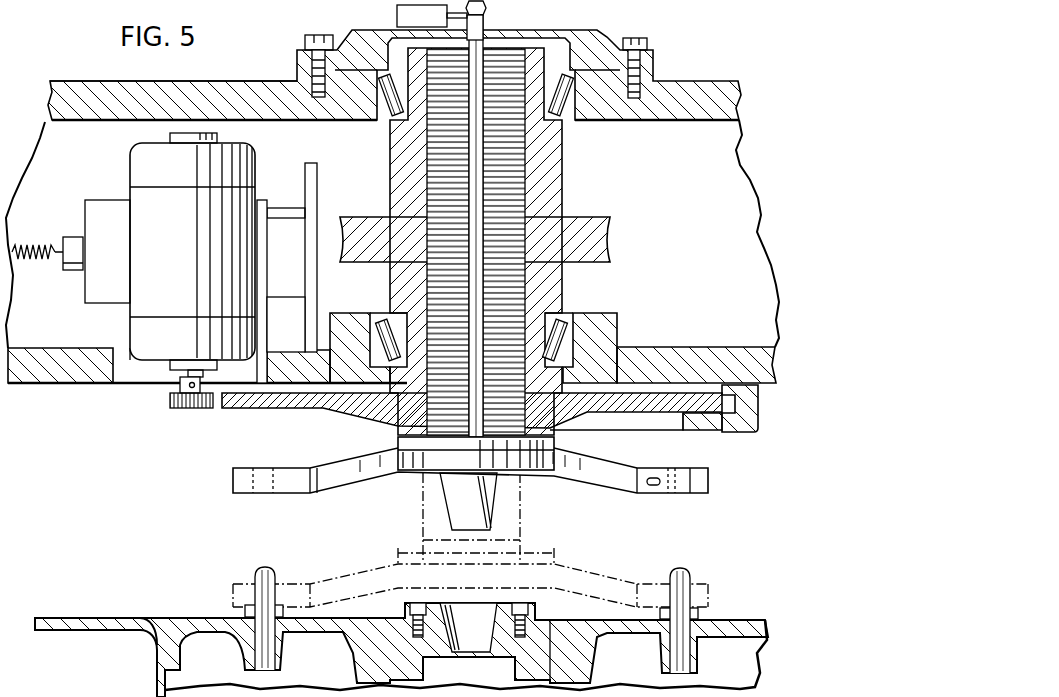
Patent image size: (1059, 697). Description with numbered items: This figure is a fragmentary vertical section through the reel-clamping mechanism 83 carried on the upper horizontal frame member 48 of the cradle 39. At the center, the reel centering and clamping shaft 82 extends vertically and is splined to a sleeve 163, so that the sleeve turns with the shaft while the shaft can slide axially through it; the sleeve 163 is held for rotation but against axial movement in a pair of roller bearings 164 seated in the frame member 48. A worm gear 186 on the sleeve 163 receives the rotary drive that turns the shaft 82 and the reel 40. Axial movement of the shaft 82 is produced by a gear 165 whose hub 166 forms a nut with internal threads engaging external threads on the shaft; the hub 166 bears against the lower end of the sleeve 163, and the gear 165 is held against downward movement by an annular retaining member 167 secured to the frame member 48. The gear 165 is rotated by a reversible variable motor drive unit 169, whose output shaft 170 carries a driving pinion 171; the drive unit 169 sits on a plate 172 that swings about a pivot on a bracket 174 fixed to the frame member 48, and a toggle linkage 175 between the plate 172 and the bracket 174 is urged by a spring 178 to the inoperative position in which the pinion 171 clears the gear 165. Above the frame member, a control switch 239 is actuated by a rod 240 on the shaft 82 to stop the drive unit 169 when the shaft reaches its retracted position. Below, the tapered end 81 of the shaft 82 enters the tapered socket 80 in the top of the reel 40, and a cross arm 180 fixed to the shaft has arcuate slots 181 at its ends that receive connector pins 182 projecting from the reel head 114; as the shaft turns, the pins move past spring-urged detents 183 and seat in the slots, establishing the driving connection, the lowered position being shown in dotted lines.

The cradle 39 is at (57, 82).
The horizontal frame member 48 is at (688, 83).
The control switch 239 is at (397, 15).
The rod 240 is at (488, 11).
The reversible variable motor drive unit 169 is at (119, 185).
The bracket 174 is at (305, 170).
The spring 178 is at (33, 240).
The toggle linkage 175 is at (70, 270).
The plate 172 is at (97, 298).
The roller bearings 164 is at (572, 105).
The sleeve 163 is at (548, 183).
The worm gear 186 is at (590, 244).
The reel centering and clamping shaft 82 is at (500, 297).
The gear 165 is at (680, 363).
The reel-clamping mechanism 83 is at (101, 396).
The output shaft 170 is at (186, 376).
The driving pinion 171 is at (180, 406).
The detents 183 is at (262, 466).
The hub 166 is at (398, 423).
The annular retaining member 167 is at (743, 432).
The cross arm 180 is at (353, 480).
The tapered end 81 is at (497, 508).
The arcuate slots 181 is at (260, 483).
The connector pins 182 is at (258, 568).
The tapered socket 80 is at (498, 607).
The head 114 is at (95, 622).
The reel 40 is at (151, 681).